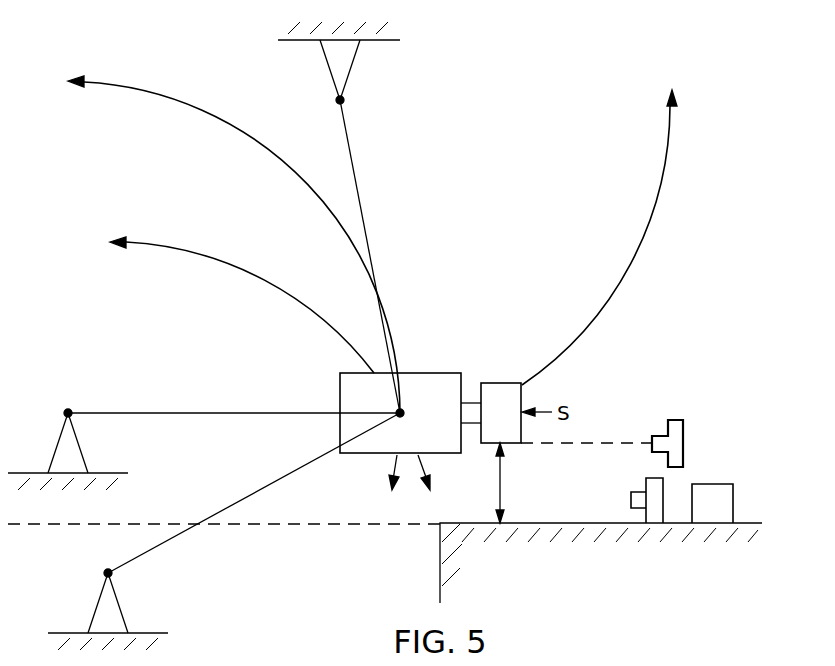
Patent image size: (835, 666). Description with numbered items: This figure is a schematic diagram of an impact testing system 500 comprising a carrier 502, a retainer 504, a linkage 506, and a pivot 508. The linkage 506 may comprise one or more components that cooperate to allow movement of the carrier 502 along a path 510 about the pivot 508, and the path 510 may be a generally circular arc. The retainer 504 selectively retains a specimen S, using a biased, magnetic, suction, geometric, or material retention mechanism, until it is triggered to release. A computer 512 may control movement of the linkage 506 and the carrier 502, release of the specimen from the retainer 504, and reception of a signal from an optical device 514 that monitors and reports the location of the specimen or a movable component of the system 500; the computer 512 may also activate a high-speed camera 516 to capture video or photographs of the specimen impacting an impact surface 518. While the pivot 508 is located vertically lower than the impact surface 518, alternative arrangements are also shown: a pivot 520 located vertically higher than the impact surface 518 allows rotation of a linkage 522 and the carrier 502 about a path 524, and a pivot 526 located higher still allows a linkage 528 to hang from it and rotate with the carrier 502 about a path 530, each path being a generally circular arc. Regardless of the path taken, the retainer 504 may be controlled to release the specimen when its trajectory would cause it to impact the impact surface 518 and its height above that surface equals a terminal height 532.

The impact testing system 500 is at (535, 158).
The carrier 502 is at (420, 372).
The retainer 504 is at (470, 402).
The linkage 506 is at (192, 526).
The pivot 508 is at (104, 575).
The path 510 is at (228, 260).
The computer 512 is at (735, 503).
The optical device 514 is at (684, 440).
The high-speed camera 516 is at (644, 486).
The impact surface 518 is at (474, 522).
The pivot 520 is at (66, 408).
The linkage 522 is at (178, 416).
The path 524 is at (190, 99).
The pivot 526 is at (345, 100).
The linkage 528 is at (363, 212).
The path 530 is at (638, 268).
The terminal height 532 is at (502, 481).